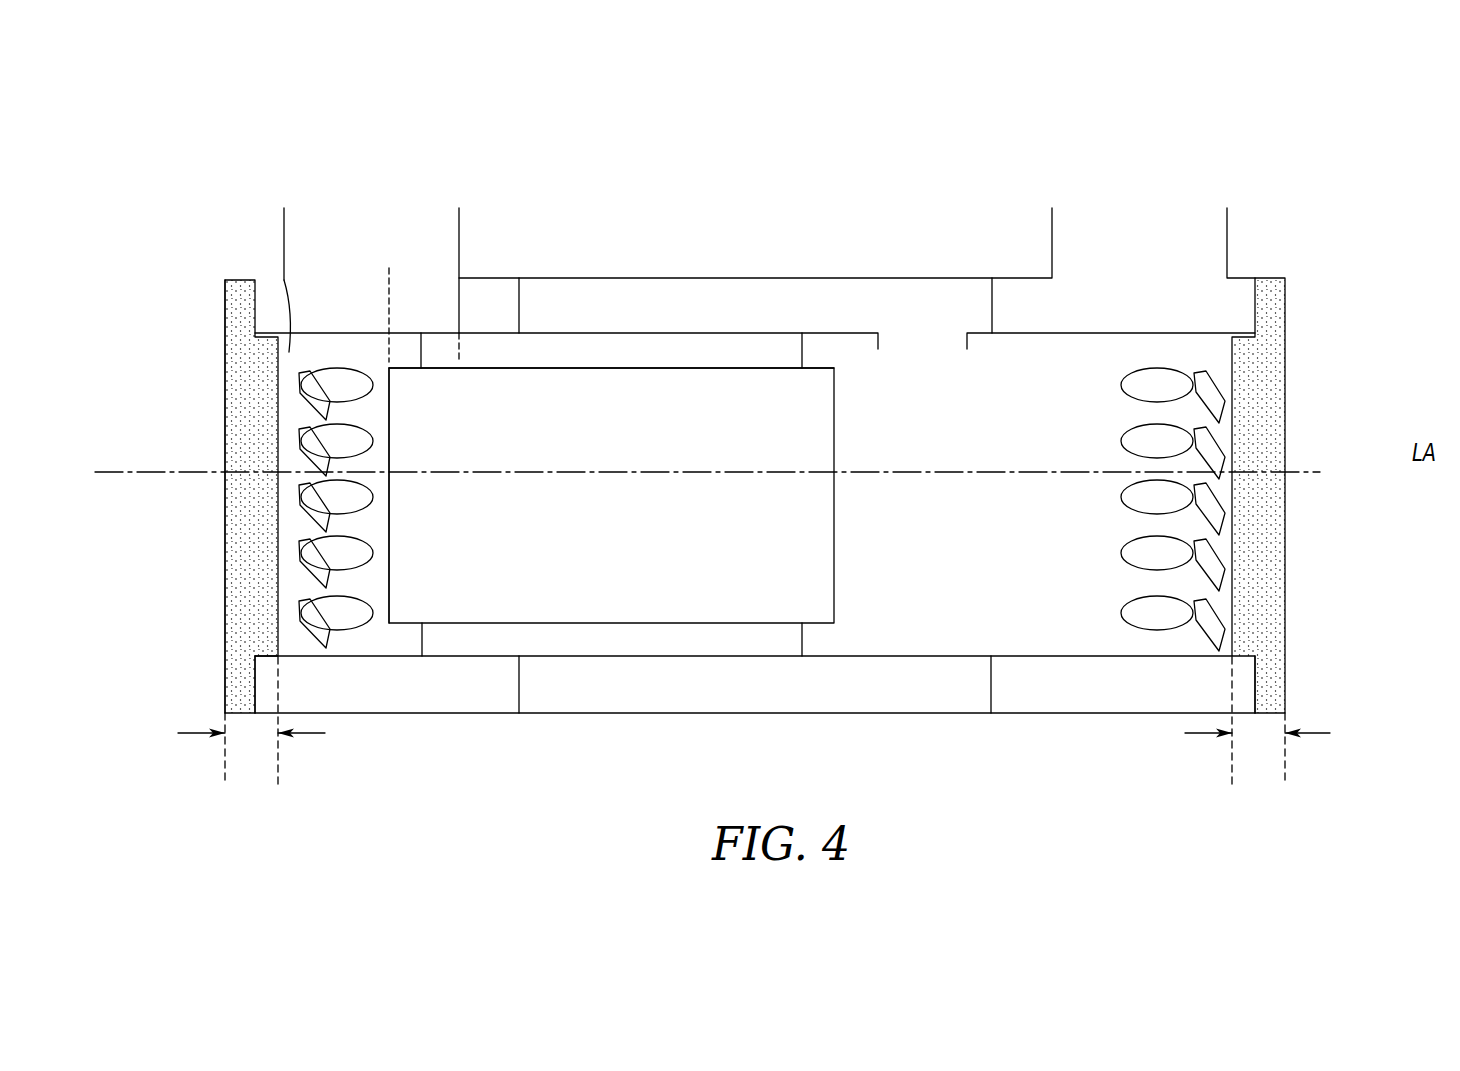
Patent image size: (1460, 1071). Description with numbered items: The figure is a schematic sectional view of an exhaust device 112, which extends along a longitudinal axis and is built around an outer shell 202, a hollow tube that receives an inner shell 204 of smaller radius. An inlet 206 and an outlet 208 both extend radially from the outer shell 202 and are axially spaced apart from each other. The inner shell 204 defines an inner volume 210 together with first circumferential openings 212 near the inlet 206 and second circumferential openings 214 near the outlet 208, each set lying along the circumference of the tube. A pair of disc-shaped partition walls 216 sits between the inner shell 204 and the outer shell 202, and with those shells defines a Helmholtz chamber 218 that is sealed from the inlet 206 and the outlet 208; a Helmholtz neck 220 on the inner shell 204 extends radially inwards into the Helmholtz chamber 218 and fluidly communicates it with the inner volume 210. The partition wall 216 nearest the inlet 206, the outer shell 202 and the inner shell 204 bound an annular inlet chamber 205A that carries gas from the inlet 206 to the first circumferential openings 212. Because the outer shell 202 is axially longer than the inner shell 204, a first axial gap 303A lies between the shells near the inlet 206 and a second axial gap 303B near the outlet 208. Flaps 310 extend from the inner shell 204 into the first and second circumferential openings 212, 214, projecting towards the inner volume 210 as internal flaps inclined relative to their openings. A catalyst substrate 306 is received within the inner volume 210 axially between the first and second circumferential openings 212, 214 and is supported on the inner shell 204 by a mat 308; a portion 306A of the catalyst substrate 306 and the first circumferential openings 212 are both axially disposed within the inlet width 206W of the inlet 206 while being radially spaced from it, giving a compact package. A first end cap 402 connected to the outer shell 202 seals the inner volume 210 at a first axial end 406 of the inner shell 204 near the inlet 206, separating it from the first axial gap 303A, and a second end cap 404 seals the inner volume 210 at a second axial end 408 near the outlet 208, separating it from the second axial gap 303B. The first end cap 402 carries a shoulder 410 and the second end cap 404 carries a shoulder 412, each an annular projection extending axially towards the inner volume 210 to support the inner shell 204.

The exhaust device 112 is at (1084, 62).
The outer shell 202 is at (537, 713).
The inner shell 204 is at (470, 656).
The annular inlet chamber 205A is at (336, 300).
The inlet 206 is at (459, 226).
The inlet width 206W is at (459, 244).
The outlet 208 is at (1227, 245).
The inner volume 210 is at (398, 634).
The first circumferential openings 212 is at (339, 386).
The second circumferential openings 214 is at (1166, 385).
The partition walls 216 is at (519, 308).
The Helmholtz chamber 218 is at (800, 302).
The Helmholtz neck 220 is at (967, 348).
The first axial gap 303A is at (196, 733).
The second axial gap 303B is at (1317, 733).
The catalyst substrate 306 is at (660, 538).
The portion of the catalyst substrate 306A is at (459, 302).
The mat 308 is at (755, 636).
The flaps 310 is at (318, 470).
The first end cap 402 is at (280, 627).
The second end cap 404 is at (1197, 647).
The first axial end 406 is at (283, 277).
The second axial end 408 is at (1208, 347).
The shoulder 410 is at (255, 655).
The shoulder 412 is at (1245, 657).